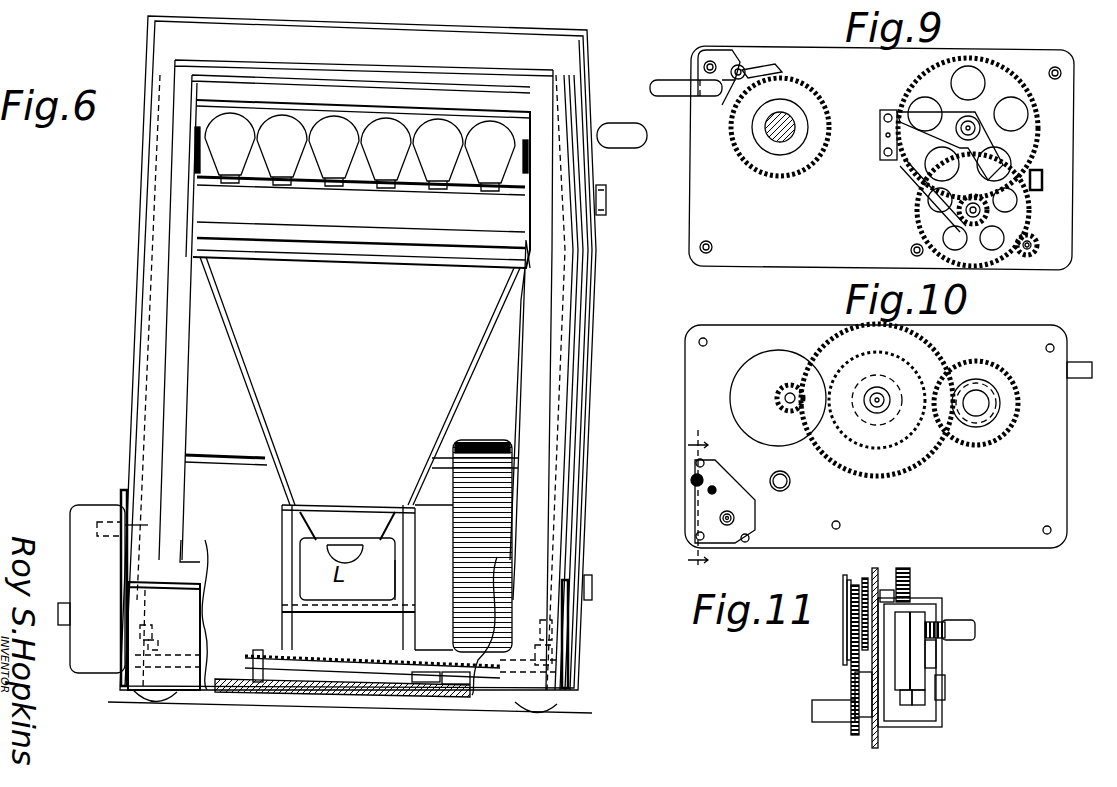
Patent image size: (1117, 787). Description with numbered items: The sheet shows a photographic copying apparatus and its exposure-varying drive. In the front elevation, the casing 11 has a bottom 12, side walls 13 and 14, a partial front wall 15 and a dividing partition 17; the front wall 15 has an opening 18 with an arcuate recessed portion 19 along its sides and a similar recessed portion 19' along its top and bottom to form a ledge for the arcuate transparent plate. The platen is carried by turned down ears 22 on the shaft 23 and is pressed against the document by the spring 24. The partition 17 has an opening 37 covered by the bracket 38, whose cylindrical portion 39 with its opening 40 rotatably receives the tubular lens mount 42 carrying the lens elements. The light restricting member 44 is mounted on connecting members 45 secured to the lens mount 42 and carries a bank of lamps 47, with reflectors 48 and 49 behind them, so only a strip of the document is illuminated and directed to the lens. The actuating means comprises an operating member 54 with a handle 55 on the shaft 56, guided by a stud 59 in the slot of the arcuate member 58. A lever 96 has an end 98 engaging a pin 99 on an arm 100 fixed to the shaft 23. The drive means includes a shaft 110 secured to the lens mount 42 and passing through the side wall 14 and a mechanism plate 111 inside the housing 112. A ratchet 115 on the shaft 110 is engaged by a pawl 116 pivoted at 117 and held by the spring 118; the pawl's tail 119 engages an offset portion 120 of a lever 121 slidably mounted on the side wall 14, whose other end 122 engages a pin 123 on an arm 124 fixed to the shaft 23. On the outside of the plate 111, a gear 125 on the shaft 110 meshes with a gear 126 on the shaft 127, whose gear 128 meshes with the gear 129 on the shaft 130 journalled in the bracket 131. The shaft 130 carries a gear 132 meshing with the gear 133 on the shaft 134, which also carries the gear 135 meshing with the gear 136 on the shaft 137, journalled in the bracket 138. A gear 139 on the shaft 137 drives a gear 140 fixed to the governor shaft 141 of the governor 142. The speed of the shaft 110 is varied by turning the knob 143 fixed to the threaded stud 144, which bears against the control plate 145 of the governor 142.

In FIG. 6, the casing 11 is at (140, 287).
In FIG. 10, the casing 11 is at (695, 501).
In FIG. 6, the bottom 12 is at (358, 693).
In FIG. 6, the side wall 13 is at (582, 308).
In FIG. 6, the side wall 14 is at (138, 378).
In FIG. 6, the partial front wall 15 is at (205, 605).
In FIG. 6, the dividing partition 17 is at (464, 386).
In FIG. 6, the opening 18 is at (186, 381).
In FIG. 6, the arcuate recessed portion 19 is at (356, 375).
In FIG. 6, the recessed portion 19' is at (355, 299).
In FIG. 6, the turned down ears 22 is at (122, 605).
In FIG. 6, the shaft 23 is at (460, 687).
In FIG. 6, the spring 24 is at (325, 673).
In FIG. 6, the opening 37 is at (282, 511).
In FIG. 6, the bracket 38 is at (407, 633).
In FIG. 6, the cylindrical portion 39 is at (290, 601).
In FIG. 6, the opening 40 is at (396, 579).
In FIG. 6, the tubular lens mount 42 is at (305, 571).
In FIG. 6, the light restricting member 44 is at (278, 381).
In FIG. 6, the connecting members 45 is at (285, 529).
In FIG. 6, the bank of lamps 47 is at (385, 184).
In FIG. 6, the reflector 48 is at (200, 118).
In FIG. 6, the reflector 49 is at (200, 160).
In FIG. 6, the operating member 54 is at (582, 366).
In FIG. 6, the handle 55 is at (647, 140).
In FIG. 6, the shaft 56 is at (592, 581).
In FIG. 6, the arcuate member 58 is at (586, 411).
In FIG. 6, the stud 59 is at (604, 211).
In FIG. 6, the lever 96 is at (553, 636).
In FIG. 6, the end of lever 98 is at (540, 627).
In FIG. 6, the pin 99 is at (534, 646).
In FIG. 6, the arm 100 is at (565, 688).
In FIG. 9, the shaft 110 is at (772, 136).
In FIG. 10, the shaft 110 is at (990, 406).
In FIG. 9, the mechanism plate 111 is at (881, 158).
In FIG. 10, the mechanism plate 111 is at (876, 436).
In FIG. 11, the mechanism plate 111 is at (870, 746).
In FIG. 6, the housing 112 is at (80, 505).
In FIG. 9, the ratchet 115 is at (806, 163).
In FIG. 9, the pawl 116 is at (778, 64).
In FIG. 9, the pivot 117 is at (745, 68).
In FIG. 9, the spring 118 is at (735, 66).
In FIG. 9, the tail 119 is at (728, 95).
In FIG. 6, the offset portion 120 is at (118, 540).
In FIG. 9, the offset portion 120 is at (704, 62).
In FIG. 6, the lever 121 is at (148, 607).
In FIG. 9, the lever 121 is at (652, 88).
In FIG. 10, the lever 121 is at (1080, 361).
In FIG. 6, the end of lever 122 is at (140, 634).
In FIG. 6, the pin 123 is at (158, 638).
In FIG. 6, the arm 124 is at (165, 695).
In FIG. 10, the gear 125 is at (998, 441).
In FIG. 10, the gear 126 is at (915, 453).
In FIG. 10, the shaft 127 is at (865, 411).
In FIG. 10, the gear 128 is at (905, 469).
In FIG. 11, the gear 128 is at (910, 583).
In FIG. 10, the gear 129 is at (775, 403).
In FIG. 9, the shaft 130 is at (1000, 118).
In FIG. 10, the shaft 130 is at (782, 393).
In FIG. 9, the bracket 131 is at (905, 171).
In FIG. 11, the bracket 131 is at (846, 575).
In FIG. 9, the gear 132 is at (1034, 176).
In FIG. 9, the gear 133 is at (916, 233).
In FIG. 11, the gear 133 is at (862, 623).
In FIG. 9, the shaft 134 is at (990, 211).
In FIG. 11, the shaft 134 is at (848, 610).
In FIG. 9, the gear 135 is at (1000, 256).
In FIG. 11, the gear 135 is at (848, 656).
In FIG. 9, the gear 136 is at (1040, 258).
In FIG. 11, the gear 136 is at (850, 693).
In FIG. 9, the shaft 137 is at (1034, 245).
In FIG. 10, the shaft 137 is at (720, 518).
In FIG. 11, the shaft 137 is at (915, 706).
In FIG. 10, the bracket 138 is at (745, 516).
In FIG. 11, the bracket 138 is at (942, 721).
In FIG. 11, the gear 139 is at (945, 689).
In FIG. 11, the gear 140 is at (937, 661).
In FIG. 11, the governor shaft 141 is at (855, 677).
In FIG. 11, the governor 142 is at (942, 599).
In FIG. 6, the knob 143 is at (66, 628).
In FIG. 11, the threaded stud 144 is at (975, 629).
In FIG. 11, the control plate 145 is at (950, 626).